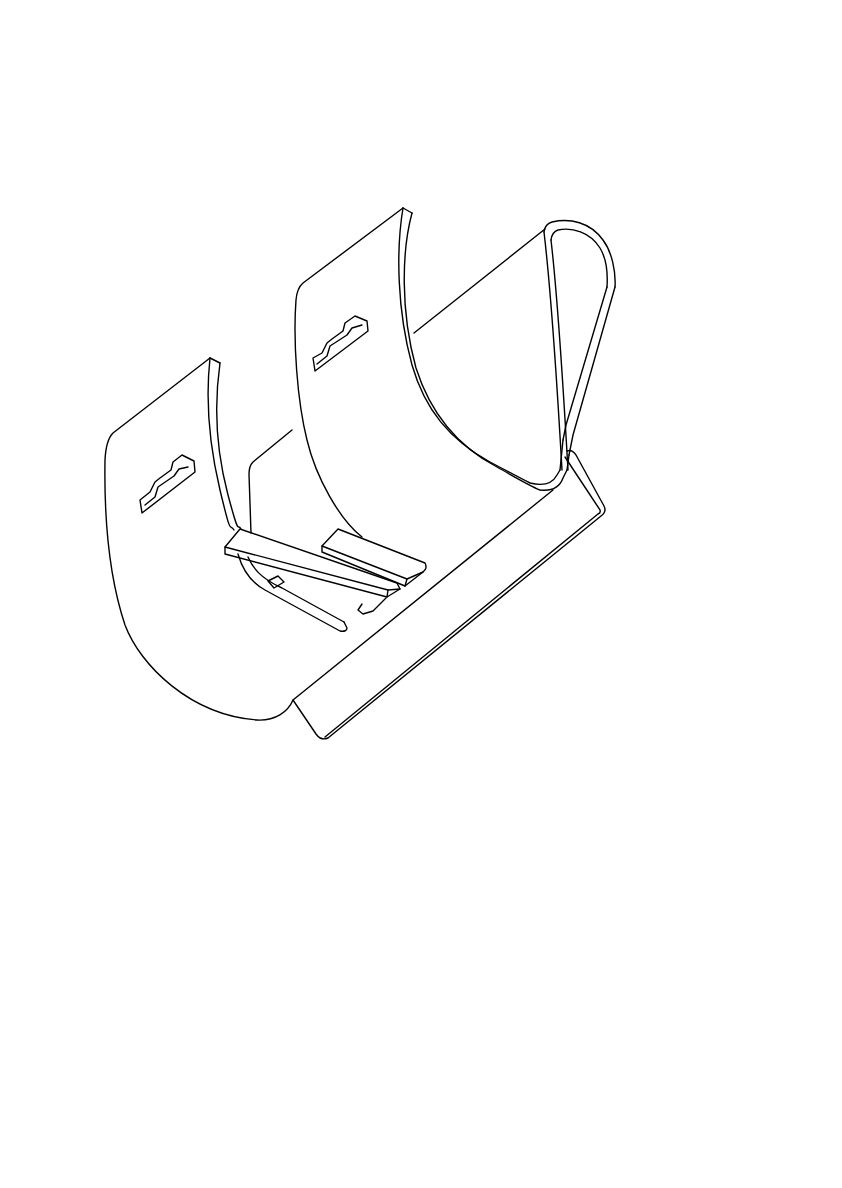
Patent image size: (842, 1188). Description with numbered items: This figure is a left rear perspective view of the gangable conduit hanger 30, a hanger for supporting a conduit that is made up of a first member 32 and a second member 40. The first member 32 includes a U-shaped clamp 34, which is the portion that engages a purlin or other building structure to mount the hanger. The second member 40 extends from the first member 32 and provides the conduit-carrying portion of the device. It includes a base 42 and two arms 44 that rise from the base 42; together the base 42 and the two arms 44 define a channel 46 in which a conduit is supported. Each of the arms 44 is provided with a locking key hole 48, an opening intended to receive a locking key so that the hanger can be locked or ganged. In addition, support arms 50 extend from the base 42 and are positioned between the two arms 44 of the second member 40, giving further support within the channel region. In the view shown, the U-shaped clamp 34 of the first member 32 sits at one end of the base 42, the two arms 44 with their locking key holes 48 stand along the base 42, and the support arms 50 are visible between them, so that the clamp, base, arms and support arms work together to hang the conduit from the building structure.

The gangable conduit hanger 30 is at (159, 126).
The first member 32 is at (602, 245).
The U-shaped clamp 34 is at (573, 297).
The second member 40 is at (118, 607).
The base 42 is at (475, 490).
The arm 44 is at (367, 268).
The channel 46 is at (497, 427).
The locking key hole 48 is at (347, 347).
The support arm 50 is at (353, 553).